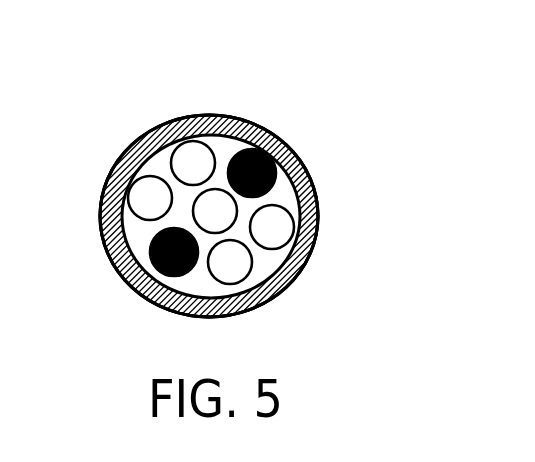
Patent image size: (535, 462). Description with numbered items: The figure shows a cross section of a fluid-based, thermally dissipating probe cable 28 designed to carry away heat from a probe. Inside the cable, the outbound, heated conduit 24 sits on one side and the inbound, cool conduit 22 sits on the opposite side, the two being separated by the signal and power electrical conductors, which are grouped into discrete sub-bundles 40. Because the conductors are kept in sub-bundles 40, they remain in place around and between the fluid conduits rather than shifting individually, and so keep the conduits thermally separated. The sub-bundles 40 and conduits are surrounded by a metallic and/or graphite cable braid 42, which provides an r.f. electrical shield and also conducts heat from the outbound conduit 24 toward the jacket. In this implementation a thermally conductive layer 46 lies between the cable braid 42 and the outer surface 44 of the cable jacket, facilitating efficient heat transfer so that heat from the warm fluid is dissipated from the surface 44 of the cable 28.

The probe cable 28 is at (120, 96).
The thermally conductive layer 46 is at (212, 121).
The outbound conduit 24 is at (275, 138).
The outer surface of the cable jacket 44 is at (110, 165).
The cable braid 42 is at (105, 200).
The inbound conduit 22 is at (153, 273).
The sub-bundles 40 is at (238, 264).